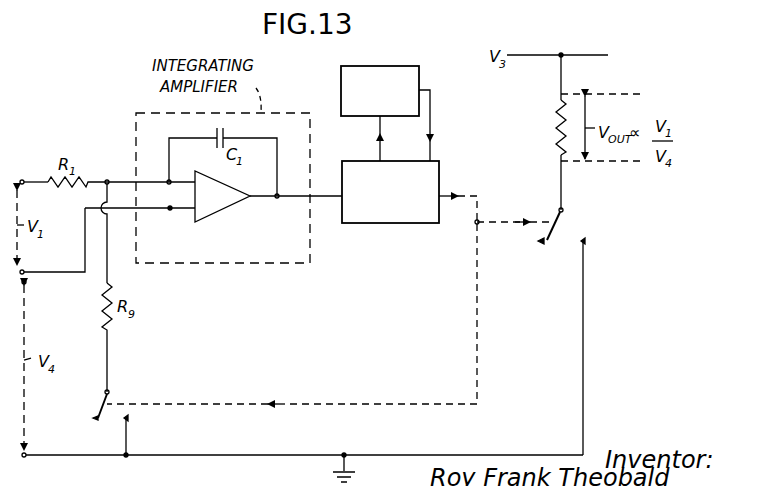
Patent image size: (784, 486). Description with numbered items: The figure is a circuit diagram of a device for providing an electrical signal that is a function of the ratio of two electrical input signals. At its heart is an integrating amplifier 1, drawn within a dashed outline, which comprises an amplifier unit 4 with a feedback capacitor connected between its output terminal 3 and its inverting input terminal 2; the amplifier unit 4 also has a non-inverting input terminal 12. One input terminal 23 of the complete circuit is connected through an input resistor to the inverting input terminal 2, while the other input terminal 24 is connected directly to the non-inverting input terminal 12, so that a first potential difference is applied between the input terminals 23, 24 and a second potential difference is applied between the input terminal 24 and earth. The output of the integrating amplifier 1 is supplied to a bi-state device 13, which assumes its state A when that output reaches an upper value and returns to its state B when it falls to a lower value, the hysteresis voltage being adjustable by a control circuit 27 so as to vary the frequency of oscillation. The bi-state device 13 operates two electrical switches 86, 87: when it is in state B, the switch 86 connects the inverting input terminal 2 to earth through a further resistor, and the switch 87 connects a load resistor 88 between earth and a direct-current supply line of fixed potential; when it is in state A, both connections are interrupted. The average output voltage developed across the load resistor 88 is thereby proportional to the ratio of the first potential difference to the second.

The integrating amplifier 1 is at (134, 125).
The inverting input terminal 2 is at (170, 180).
The output terminal 3 is at (278, 200).
The amplifier unit 4 is at (216, 219).
The non-inverting input terminal 12 is at (170, 212).
The bi-state device 13 is at (440, 176).
The input terminal 23 is at (22, 180).
The input terminal 24 is at (26, 271).
The control circuit 27 is at (420, 68).
The electrical switch 86 is at (99, 422).
The electrical switch 87 is at (550, 250).
The load resistor 88 is at (558, 112).